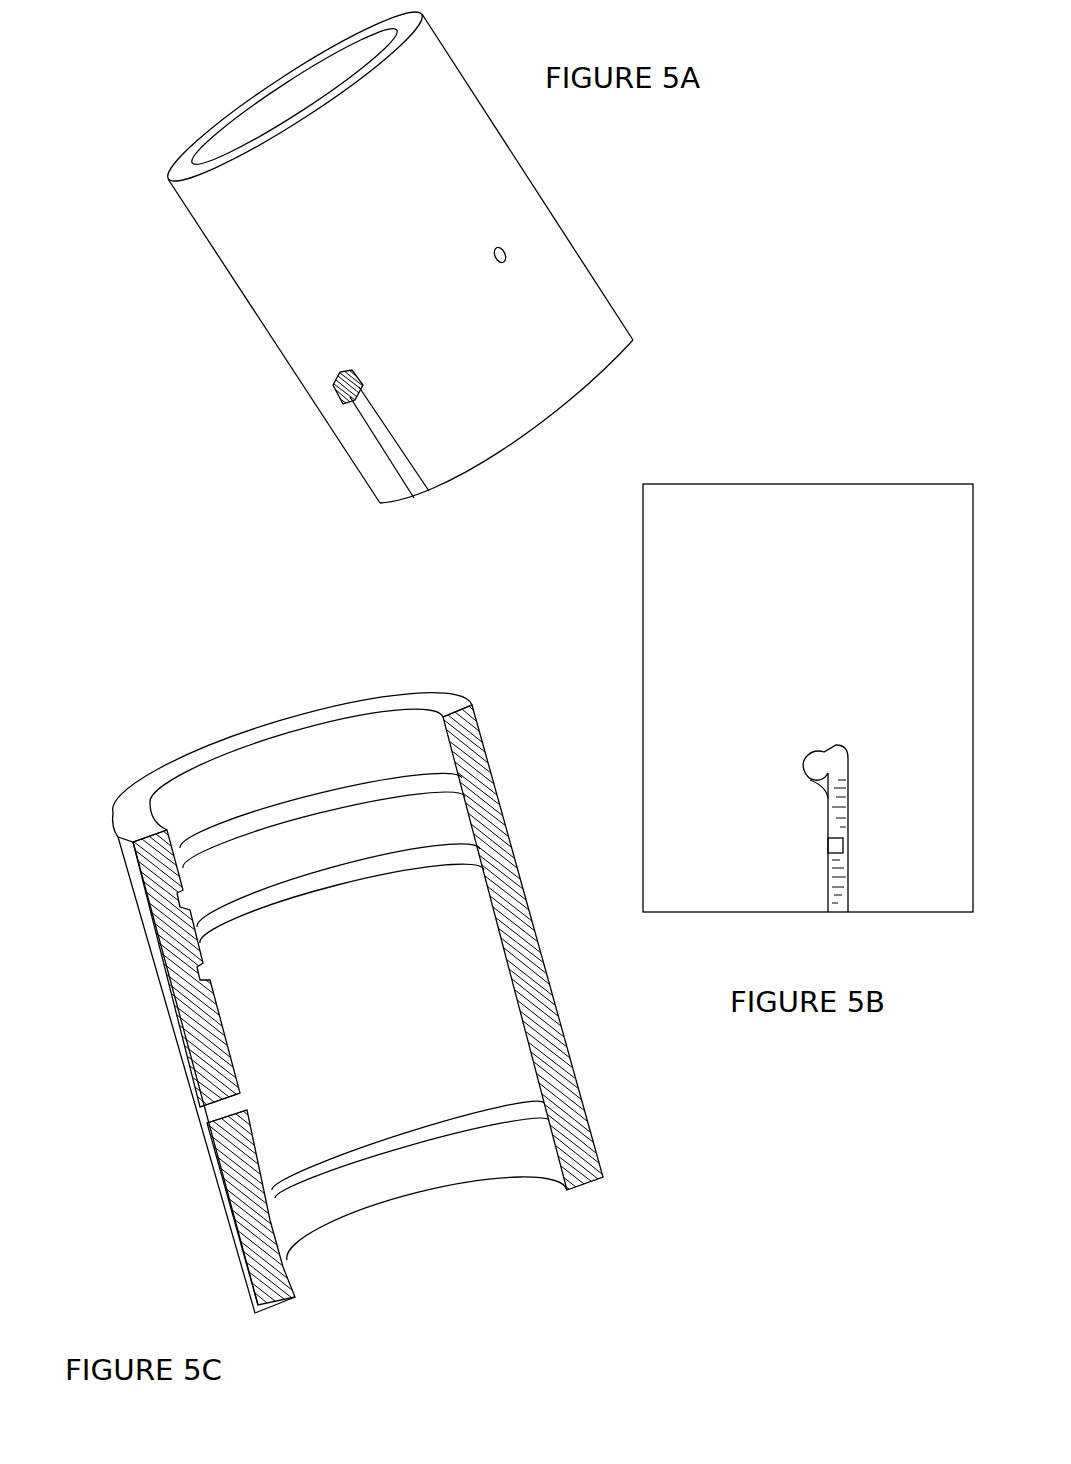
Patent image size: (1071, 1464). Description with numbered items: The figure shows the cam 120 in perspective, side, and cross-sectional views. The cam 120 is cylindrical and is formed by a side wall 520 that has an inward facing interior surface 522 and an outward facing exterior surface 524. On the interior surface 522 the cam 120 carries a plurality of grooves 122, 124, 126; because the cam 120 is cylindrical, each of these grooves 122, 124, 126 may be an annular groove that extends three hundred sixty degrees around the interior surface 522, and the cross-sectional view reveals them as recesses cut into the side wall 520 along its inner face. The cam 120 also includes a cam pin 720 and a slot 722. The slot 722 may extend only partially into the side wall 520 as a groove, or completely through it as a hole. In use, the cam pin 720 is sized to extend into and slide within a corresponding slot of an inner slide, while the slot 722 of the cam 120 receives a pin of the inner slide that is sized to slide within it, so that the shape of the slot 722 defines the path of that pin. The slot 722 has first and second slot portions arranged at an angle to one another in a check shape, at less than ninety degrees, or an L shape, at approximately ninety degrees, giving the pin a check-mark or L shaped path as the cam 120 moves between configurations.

In FIG. 5A, the cam 120 is at (260, 318).
In FIG. 5B, the cam 120 is at (645, 594).
In FIG. 5C, the cam 120 is at (181, 1066).
In FIG. 5C, the groove 122 is at (262, 812).
In FIG. 5C, the groove 124 is at (257, 893).
In FIG. 5C, the groove 126 is at (410, 1133).
In FIG. 5C, the side wall 520 is at (577, 1157).
In FIG. 5A, the interior surface 522 is at (302, 95).
In FIG. 5C, the interior surface 522 is at (457, 963).
In FIG. 5A, the exterior surface 524 is at (567, 353).
In FIG. 5B, the exterior surface 524 is at (703, 670).
In FIG. 5A, the cam pin 720 is at (506, 249).
In FIG. 5A, the slot 722 is at (378, 437).
In FIG. 5B, the slot 722 is at (822, 749).
In FIG. 5C, the slot 722 is at (202, 1118).